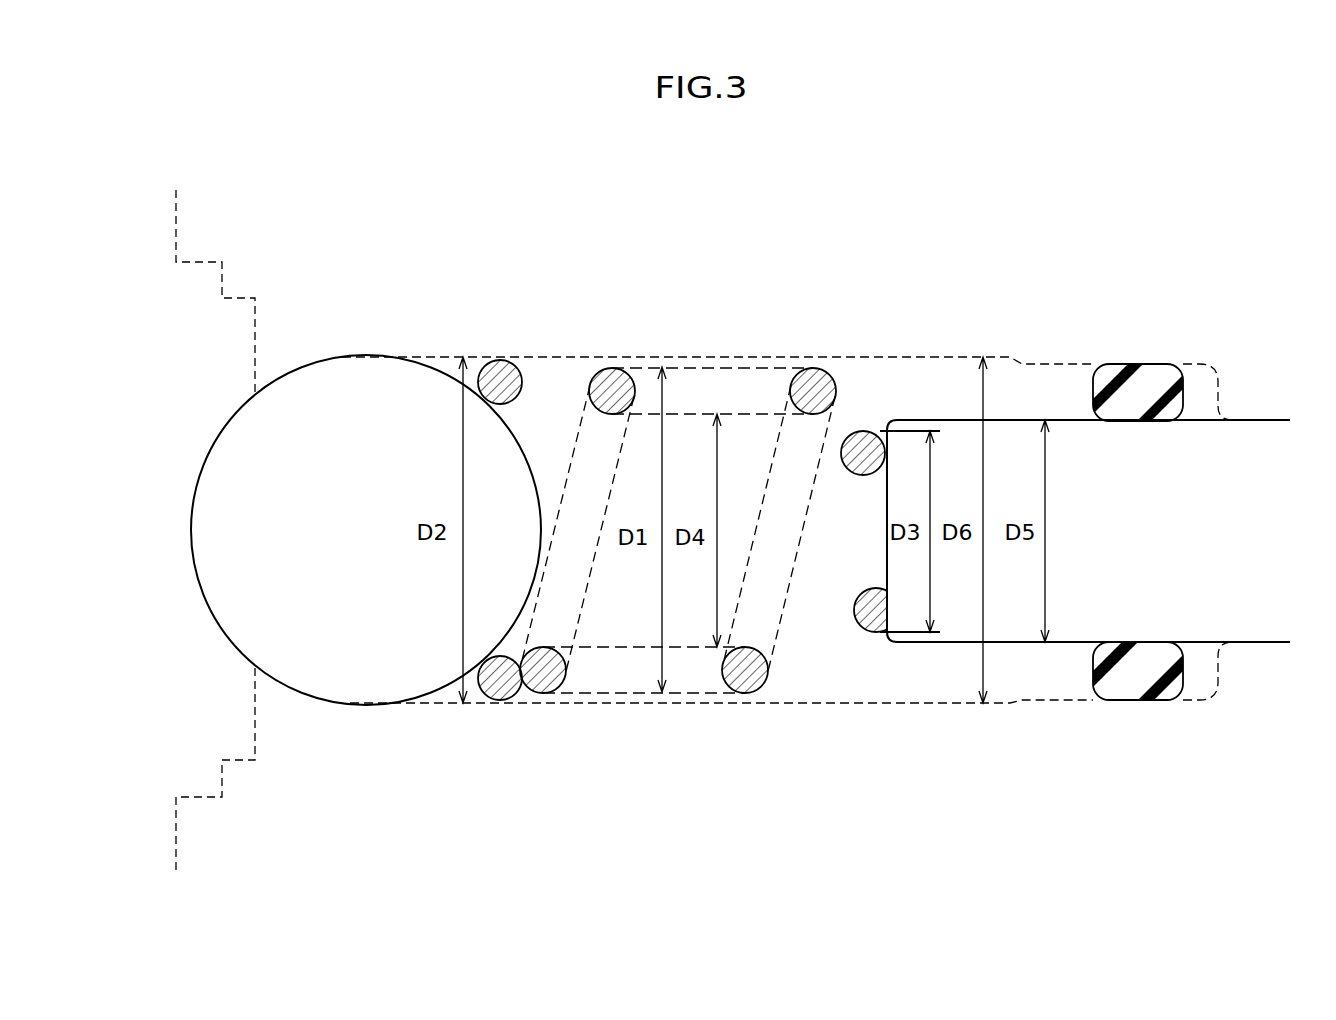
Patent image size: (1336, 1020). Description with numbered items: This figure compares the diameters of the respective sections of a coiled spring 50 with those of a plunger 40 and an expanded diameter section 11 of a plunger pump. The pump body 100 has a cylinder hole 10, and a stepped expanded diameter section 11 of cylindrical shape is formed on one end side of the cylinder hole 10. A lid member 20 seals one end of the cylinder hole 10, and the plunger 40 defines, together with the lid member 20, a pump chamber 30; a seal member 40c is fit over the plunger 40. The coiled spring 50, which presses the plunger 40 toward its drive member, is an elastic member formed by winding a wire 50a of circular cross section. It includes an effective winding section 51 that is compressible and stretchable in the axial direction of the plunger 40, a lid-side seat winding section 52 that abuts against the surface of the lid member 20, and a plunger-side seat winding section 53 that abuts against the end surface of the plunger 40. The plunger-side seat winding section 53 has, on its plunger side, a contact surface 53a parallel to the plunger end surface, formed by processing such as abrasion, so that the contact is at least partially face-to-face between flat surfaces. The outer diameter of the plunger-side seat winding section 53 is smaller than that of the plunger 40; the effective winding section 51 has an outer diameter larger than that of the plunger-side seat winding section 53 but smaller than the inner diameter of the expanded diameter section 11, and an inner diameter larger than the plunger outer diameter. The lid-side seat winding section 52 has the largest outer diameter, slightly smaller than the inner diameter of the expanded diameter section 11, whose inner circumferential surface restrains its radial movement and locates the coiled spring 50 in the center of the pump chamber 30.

The pump body 100 is at (190, 213).
The cylinder hole 10 is at (787, 574).
The expanded diameter section 11 is at (790, 703).
The lid member 20 is at (235, 445).
The pump chamber 30 is at (750, 437).
The plunger 40 is at (1085, 543).
The seal member 40c is at (1112, 382).
The coiled spring 50 is at (678, 521).
The wire 50a is at (580, 672).
The effective winding section 51 is at (698, 672).
The lid-side seat winding section 52 is at (502, 688).
The plunger-side seat winding section 53 is at (870, 632).
The contact surface 53a is at (895, 612).